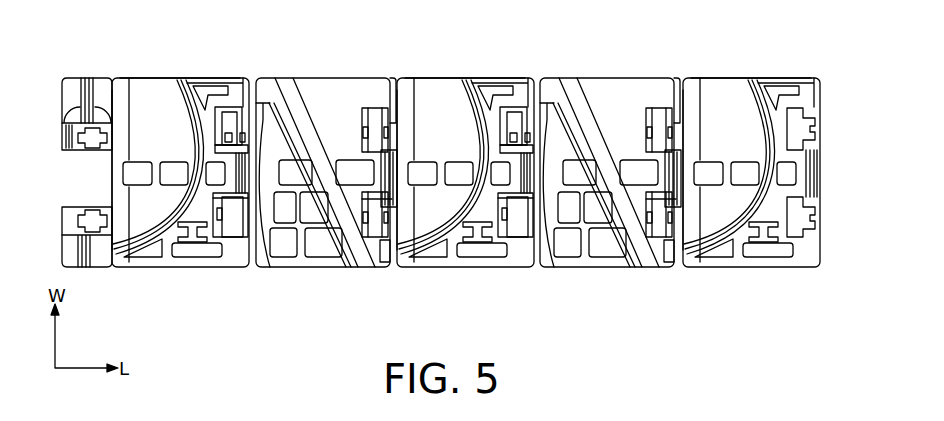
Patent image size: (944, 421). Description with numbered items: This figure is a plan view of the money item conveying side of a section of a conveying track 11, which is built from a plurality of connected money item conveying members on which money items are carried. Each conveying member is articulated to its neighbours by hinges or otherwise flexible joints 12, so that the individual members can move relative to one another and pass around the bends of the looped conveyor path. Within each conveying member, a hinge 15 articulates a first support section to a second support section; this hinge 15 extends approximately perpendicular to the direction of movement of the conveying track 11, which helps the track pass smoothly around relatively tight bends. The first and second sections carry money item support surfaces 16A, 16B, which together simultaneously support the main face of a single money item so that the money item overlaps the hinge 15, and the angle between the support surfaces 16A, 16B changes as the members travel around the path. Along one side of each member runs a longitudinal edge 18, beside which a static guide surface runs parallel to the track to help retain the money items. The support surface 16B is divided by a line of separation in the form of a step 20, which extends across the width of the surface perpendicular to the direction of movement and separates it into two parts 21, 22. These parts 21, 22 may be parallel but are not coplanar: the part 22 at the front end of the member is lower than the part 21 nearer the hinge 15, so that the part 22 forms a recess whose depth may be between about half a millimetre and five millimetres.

The conveying track 11 is at (763, 60).
The flexible joint 12 is at (246, 222).
The hinge 15 is at (374, 108).
The money item support surface 16A is at (356, 140).
The money item support surface 16B is at (177, 140).
The longitudinal edge 18 is at (307, 66).
The step 20 is at (123, 190).
The part of support surface 21 is at (118, 78).
The part of support surface 22 is at (155, 78).